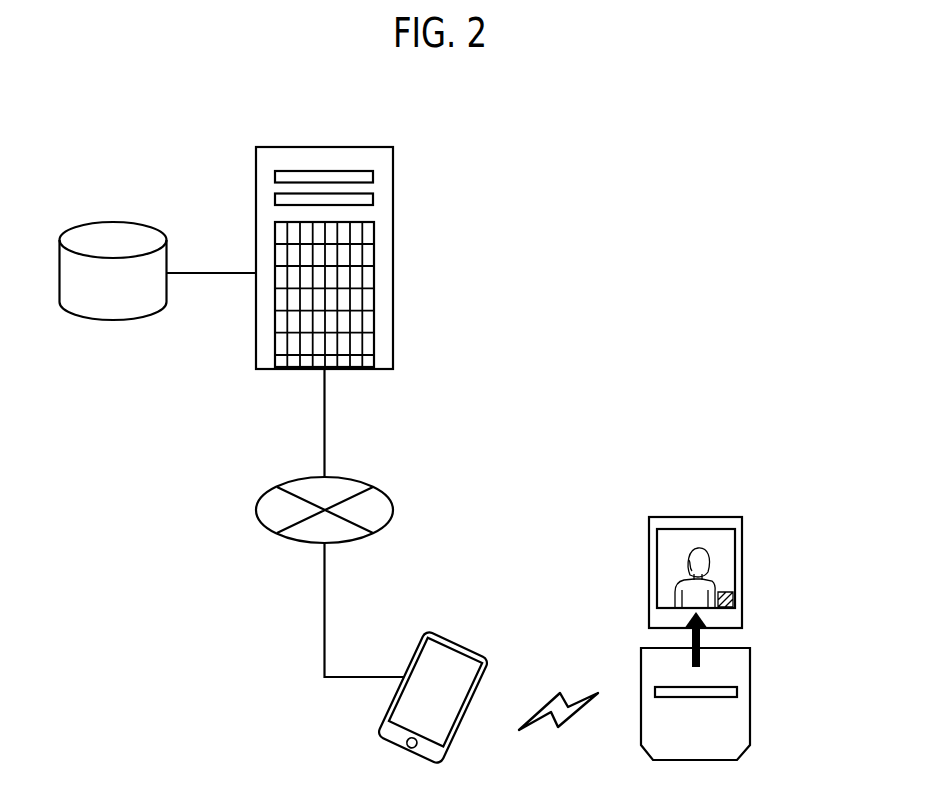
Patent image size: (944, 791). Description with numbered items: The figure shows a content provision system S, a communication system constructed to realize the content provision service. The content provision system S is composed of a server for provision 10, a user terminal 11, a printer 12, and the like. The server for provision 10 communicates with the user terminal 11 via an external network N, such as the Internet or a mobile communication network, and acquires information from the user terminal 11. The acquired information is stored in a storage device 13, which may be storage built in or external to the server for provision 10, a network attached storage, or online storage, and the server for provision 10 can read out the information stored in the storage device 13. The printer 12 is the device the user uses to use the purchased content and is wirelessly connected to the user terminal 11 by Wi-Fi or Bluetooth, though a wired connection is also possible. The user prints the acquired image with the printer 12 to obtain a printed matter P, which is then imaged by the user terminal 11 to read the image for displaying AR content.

The content provision system S is at (627, 181).
The server for provision 10 is at (403, 162).
The storage device 13 is at (114, 230).
The external network N is at (366, 479).
The user terminal 11 is at (466, 636).
The printed matter P is at (751, 542).
The printer 12 is at (764, 723).